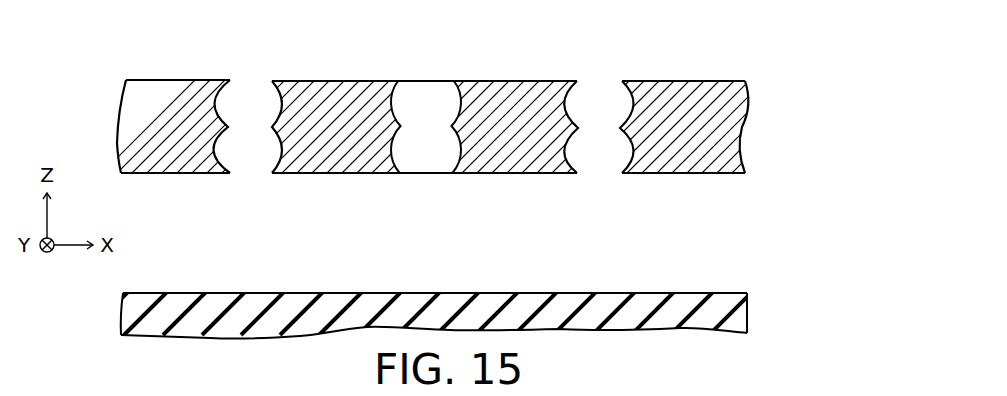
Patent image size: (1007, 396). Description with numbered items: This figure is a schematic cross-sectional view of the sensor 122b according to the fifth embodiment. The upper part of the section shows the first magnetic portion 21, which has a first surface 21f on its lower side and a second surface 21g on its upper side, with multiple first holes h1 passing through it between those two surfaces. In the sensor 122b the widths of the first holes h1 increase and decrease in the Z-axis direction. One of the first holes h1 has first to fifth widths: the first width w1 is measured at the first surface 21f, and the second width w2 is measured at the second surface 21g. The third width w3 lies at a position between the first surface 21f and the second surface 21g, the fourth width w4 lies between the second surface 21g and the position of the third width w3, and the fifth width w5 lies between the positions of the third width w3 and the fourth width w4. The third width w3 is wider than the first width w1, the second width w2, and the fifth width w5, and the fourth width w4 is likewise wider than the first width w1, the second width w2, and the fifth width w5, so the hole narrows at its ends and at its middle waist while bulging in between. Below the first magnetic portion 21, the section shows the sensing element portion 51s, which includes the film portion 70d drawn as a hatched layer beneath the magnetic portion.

The first magnetic portion 21 is at (713, 127).
The second surface 21g is at (353, 80).
The first surface 21f is at (345, 174).
The sensor 122b is at (772, 80).
The first holes h1 is at (462, 97).
The first width w1 is at (452, 173).
The second width w2 is at (400, 81).
The third width w3 is at (391, 151).
The fourth width w4 is at (391, 102).
The fifth width w5 is at (401, 126).
The film portion 70d is at (655, 305).
The sensing element portion 51s is at (752, 317).